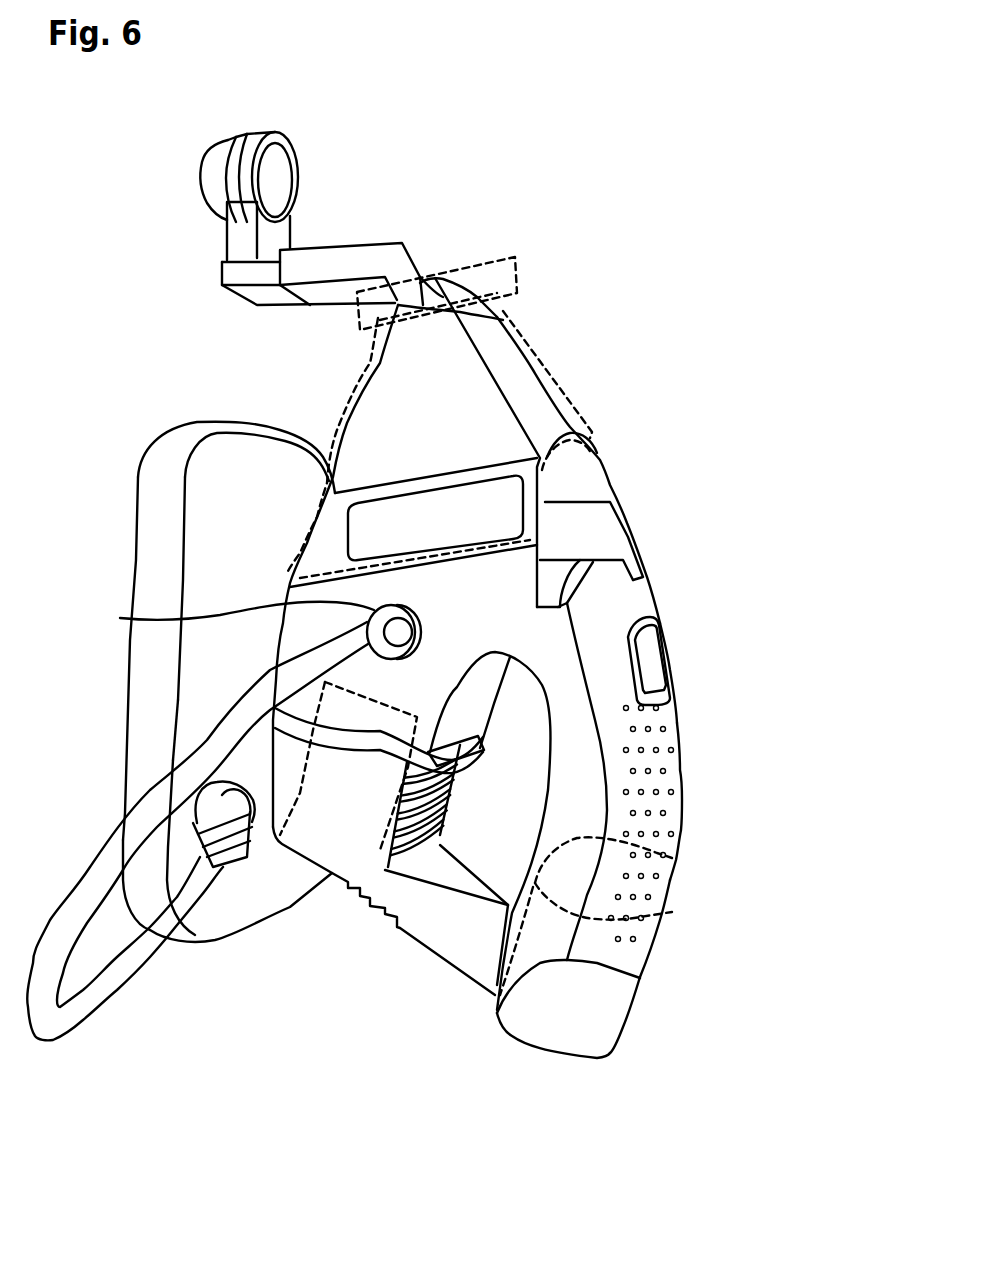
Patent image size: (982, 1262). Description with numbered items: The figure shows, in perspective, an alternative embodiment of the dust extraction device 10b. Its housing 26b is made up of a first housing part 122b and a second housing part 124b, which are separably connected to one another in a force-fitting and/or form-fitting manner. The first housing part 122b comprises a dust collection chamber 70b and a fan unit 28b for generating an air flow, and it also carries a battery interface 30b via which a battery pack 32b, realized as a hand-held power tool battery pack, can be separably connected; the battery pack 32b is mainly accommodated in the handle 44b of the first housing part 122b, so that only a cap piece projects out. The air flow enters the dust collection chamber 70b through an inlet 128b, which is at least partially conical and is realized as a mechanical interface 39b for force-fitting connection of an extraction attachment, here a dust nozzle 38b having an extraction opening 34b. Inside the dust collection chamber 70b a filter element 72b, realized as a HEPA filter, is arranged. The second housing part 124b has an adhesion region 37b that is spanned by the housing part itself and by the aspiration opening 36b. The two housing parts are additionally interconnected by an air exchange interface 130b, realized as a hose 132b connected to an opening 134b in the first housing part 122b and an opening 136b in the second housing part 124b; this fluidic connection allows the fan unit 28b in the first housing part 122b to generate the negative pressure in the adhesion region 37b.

The dust extraction device 10b is at (396, 613).
The housing 26b is at (505, 644).
The fan unit 28b is at (390, 847).
The battery interface 30b is at (729, 801).
The battery pack 32b is at (642, 947).
The extraction opening 34b is at (177, 177).
The aspiration opening 36b is at (78, 658).
The adhesion region 37b is at (101, 594).
The dust nozzle 38b is at (332, 206).
The mechanical interface 39b is at (452, 242).
The handle 44b is at (699, 822).
The dust collection chamber 70b is at (594, 390).
The filter element 72b is at (444, 452).
The first housing part 122b is at (663, 716).
The second housing part 124b is at (207, 647).
The inlet 128b is at (450, 230).
The air exchange interface 130b is at (92, 730).
The hose 132b is at (197, 870).
The opening 134b is at (131, 810).
The opening 136b is at (213, 626).